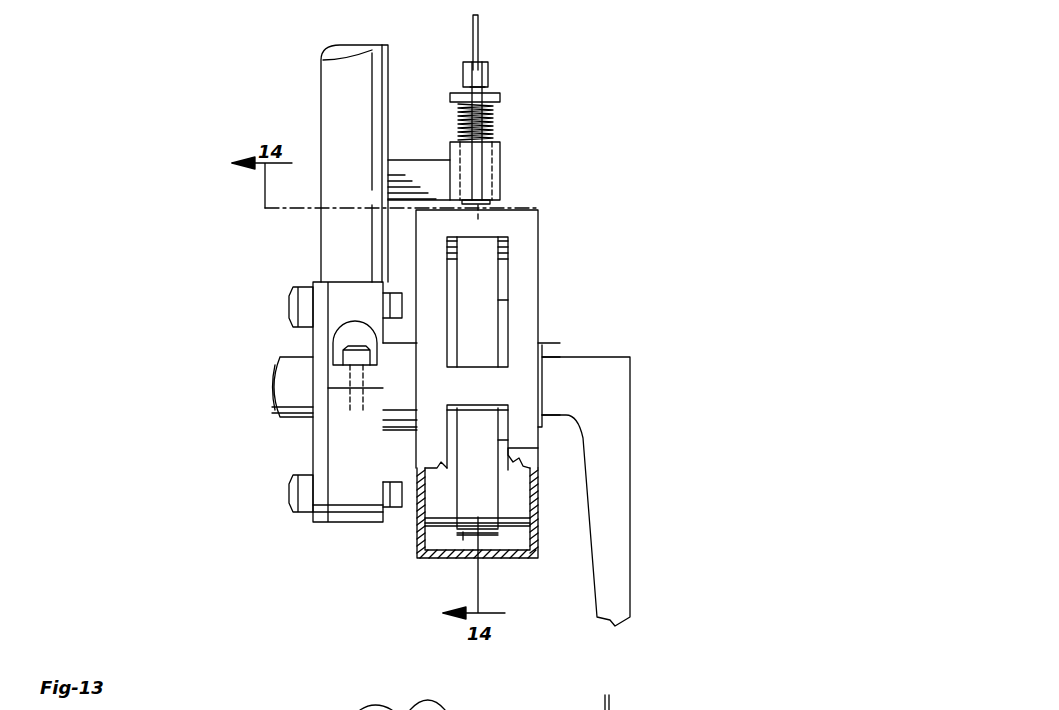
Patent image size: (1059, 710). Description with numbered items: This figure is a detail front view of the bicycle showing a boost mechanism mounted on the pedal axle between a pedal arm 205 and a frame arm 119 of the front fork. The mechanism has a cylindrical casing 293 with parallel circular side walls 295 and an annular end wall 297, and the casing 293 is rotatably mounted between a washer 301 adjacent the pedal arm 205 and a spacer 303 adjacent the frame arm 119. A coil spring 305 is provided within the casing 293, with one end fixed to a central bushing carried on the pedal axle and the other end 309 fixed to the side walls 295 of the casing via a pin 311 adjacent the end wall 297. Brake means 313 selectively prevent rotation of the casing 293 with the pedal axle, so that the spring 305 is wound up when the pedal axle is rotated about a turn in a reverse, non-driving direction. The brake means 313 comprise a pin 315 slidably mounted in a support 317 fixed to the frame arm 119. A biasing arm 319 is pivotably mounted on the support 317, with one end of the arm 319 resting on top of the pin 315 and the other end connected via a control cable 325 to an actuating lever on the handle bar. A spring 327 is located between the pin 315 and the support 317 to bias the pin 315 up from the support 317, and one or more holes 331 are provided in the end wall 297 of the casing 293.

The frame arm 119 is at (320, 77).
The support 317 is at (404, 159).
The control cable 325 is at (479, 42).
The biasing arm 319 is at (483, 62).
The spring 327 is at (495, 117).
The pin 315 is at (500, 202).
The cylindrical casing 293 is at (540, 240).
The coil spring 305 is at (498, 288).
The holes 331 is at (508, 306).
The washer 301 is at (540, 345).
The pedal arm 205 is at (618, 553).
The side walls 295 is at (533, 503).
The pin 311 is at (432, 527).
The other end 309 is at (458, 537).
The annular end wall 297 is at (463, 540).
The spacer 303 is at (400, 431).
The brake means 313 is at (505, 709).